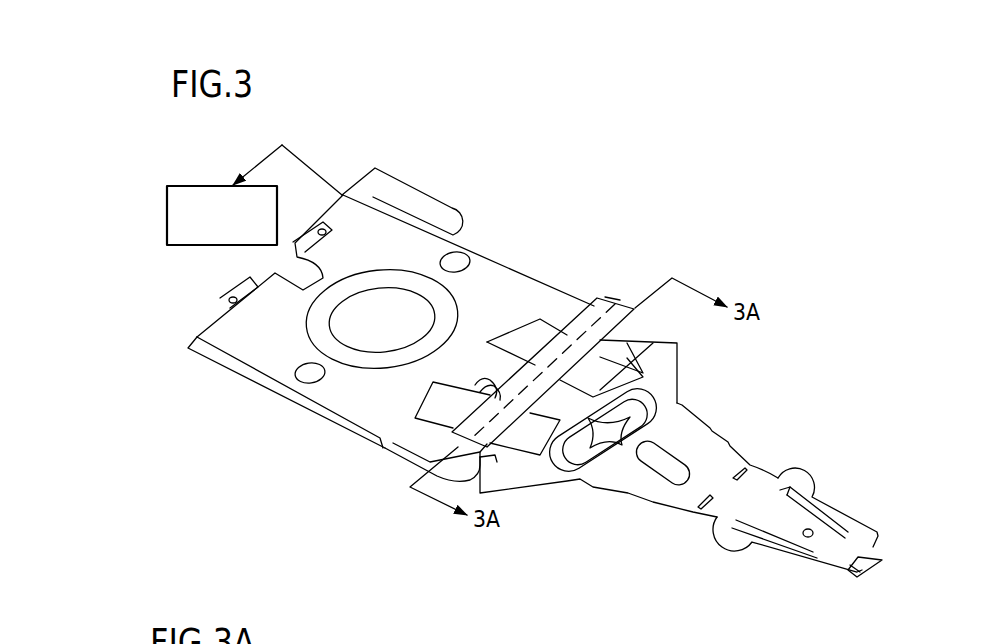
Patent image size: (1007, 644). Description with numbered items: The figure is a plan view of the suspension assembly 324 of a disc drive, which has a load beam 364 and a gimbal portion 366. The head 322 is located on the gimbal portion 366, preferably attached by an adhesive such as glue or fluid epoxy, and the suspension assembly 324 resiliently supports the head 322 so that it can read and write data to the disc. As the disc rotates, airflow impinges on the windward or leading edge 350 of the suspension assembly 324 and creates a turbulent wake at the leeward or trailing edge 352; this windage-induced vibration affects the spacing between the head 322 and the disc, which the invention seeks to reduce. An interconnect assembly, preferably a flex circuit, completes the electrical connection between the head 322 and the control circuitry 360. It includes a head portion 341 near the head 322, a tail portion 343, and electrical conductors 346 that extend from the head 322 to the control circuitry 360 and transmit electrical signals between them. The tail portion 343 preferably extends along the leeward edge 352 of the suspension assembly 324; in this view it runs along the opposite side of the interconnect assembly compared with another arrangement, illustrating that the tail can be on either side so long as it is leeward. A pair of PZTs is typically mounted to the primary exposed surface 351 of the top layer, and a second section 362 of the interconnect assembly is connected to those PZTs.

The head 322 is at (872, 568).
The suspension assembly 324 is at (742, 437).
The head portion 341 is at (827, 508).
The tail portion 343 is at (377, 178).
The electrical conductors 346 is at (590, 455).
The leading edge 350 is at (500, 260).
The primary exposed surface 351 is at (355, 407).
The trailing edge 352 is at (400, 447).
The control circuitry 360 is at (166, 203).
The second section 362 is at (608, 312).
The load beam 364 is at (668, 418).
The gimbal portion 366 is at (823, 577).